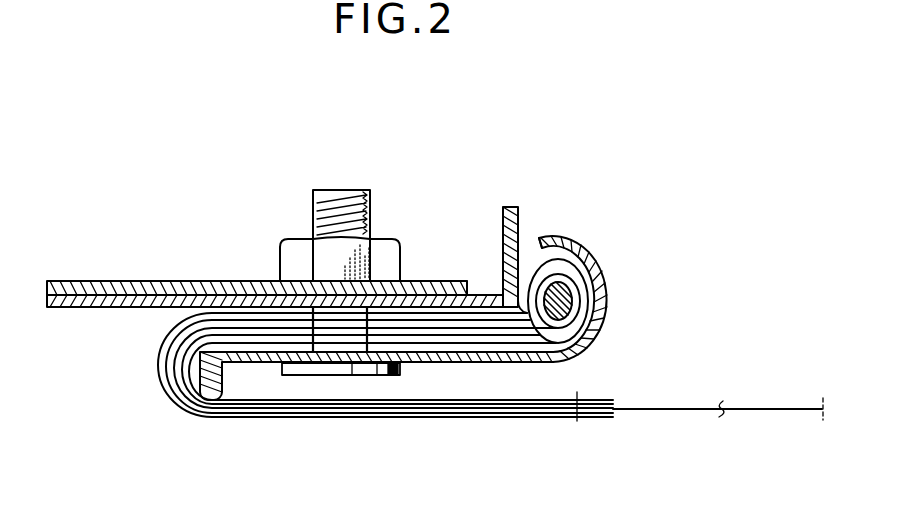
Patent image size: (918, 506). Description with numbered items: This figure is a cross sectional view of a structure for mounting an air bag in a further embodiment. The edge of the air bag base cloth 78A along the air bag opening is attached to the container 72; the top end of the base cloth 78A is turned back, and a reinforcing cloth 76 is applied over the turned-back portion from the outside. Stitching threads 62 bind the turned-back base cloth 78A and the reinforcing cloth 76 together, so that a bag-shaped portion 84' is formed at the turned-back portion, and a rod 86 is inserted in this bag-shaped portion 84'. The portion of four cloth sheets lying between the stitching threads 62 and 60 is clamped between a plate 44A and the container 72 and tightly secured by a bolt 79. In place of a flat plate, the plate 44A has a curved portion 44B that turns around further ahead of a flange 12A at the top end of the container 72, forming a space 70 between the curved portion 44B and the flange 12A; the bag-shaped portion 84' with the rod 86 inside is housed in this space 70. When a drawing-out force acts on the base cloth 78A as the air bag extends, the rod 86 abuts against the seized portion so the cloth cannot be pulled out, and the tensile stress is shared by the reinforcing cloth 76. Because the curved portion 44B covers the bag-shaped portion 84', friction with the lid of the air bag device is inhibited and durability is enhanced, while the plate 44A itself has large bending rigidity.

The container 72 is at (77, 308).
The flange 12A is at (519, 217).
The stitching threads 62 is at (498, 286).
The bolt 79 is at (369, 206).
The plate 44A is at (460, 363).
The curved portion 44B is at (605, 274).
The space 70 is at (657, 228).
The rod 86 is at (571, 297).
The bag-shaped portion 84' is at (610, 309).
The reinforcing cloth 76 is at (606, 399).
The stitching thread 60 is at (577, 421).
The air bag base cloth 78A is at (721, 411).